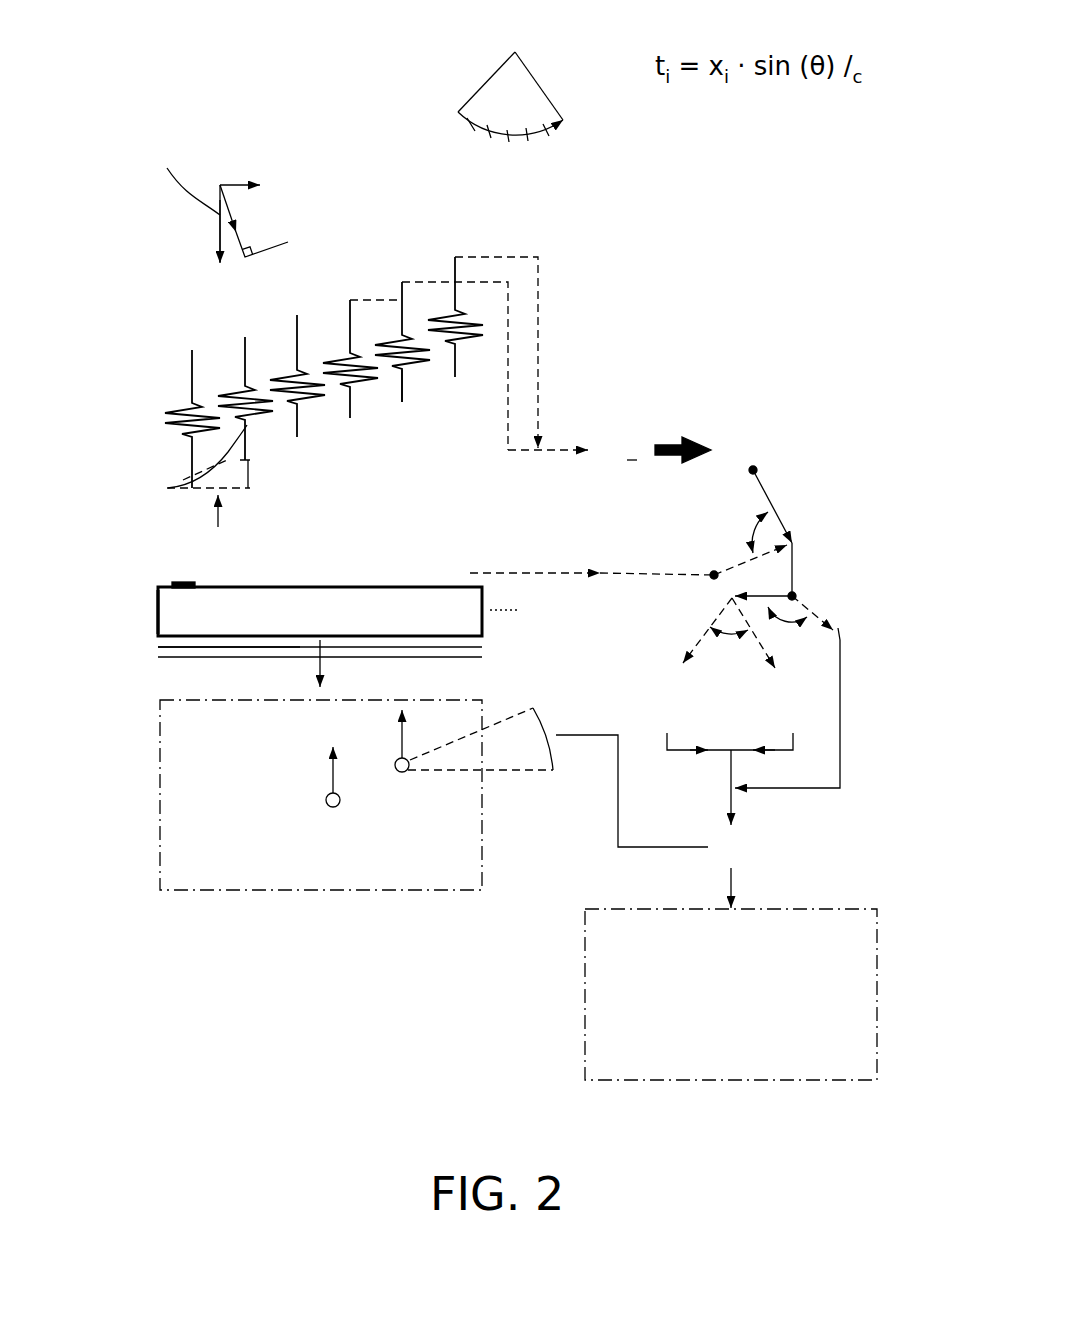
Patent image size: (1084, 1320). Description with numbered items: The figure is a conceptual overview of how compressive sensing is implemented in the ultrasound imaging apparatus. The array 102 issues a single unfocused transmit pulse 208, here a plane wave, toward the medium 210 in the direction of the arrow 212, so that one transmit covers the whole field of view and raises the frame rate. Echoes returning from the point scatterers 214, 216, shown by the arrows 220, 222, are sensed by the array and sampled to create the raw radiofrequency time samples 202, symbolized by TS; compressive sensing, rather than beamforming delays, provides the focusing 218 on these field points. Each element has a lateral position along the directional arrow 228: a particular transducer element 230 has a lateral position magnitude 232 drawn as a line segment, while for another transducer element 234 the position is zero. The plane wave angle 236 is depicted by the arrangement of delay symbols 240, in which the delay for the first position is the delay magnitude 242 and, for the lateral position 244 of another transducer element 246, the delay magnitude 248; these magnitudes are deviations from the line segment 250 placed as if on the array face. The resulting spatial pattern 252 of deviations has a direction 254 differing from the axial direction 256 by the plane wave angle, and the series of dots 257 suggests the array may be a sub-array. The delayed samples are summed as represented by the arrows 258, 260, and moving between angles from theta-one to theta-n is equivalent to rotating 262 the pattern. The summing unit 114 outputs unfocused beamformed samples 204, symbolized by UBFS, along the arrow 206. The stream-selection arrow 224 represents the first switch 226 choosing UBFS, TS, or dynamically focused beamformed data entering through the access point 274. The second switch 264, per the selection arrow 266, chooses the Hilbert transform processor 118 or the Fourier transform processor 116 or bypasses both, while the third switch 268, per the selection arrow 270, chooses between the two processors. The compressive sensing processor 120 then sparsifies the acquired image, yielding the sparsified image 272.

The array 102 is at (485, 622).
The summing unit 114 is at (607, 435).
The Fourier transform processor 116 is at (820, 715).
The Hilbert transform processor 118 is at (663, 697).
The compressive sensing processor 120 is at (758, 852).
The time samples 202 is at (460, 562).
The unfocused beamformed samples 204 is at (630, 462).
The arrow 206 is at (670, 443).
The unfocused transmit pulse 208 is at (485, 650).
The medium 210 is at (230, 892).
The arrow 212 is at (320, 650).
The point scatterer 214 is at (400, 772).
The point scatterer 216 is at (325, 803).
The focusing 218 is at (525, 777).
The arrow 220 is at (330, 775).
The arrow 222 is at (400, 757).
The stream-selection arrow 224 is at (752, 522).
The first switch 226 is at (800, 533).
The directional arrow 228 is at (238, 185).
The transducer element 230 is at (170, 637).
The lateral position magnitude 232 is at (178, 585).
The transducer element 234 is at (158, 603).
The plane wave angle 236 is at (503, 40).
The delay symbols 240 is at (338, 345).
The delay magnitude 242 is at (246, 433).
The lateral position 244 is at (219, 526).
The transducer element 246 is at (250, 587).
The delay magnitude 248 is at (250, 462).
The line segment 250 is at (250, 488).
The spatial pattern 252 is at (403, 422).
The direction 254 is at (232, 222).
The axial direction 256 is at (220, 221).
The series of dots 257 is at (522, 612).
The arrow 258 is at (510, 335).
The arrow 260 is at (540, 292).
The rotating 262 is at (517, 130).
The second switch 264 is at (815, 598).
The selection arrow 266 is at (787, 623).
The third switch 268 is at (720, 595).
The selection arrow 270 is at (730, 635).
The sparsified image 272 is at (708, 1082).
The access point 274 is at (860, 458).